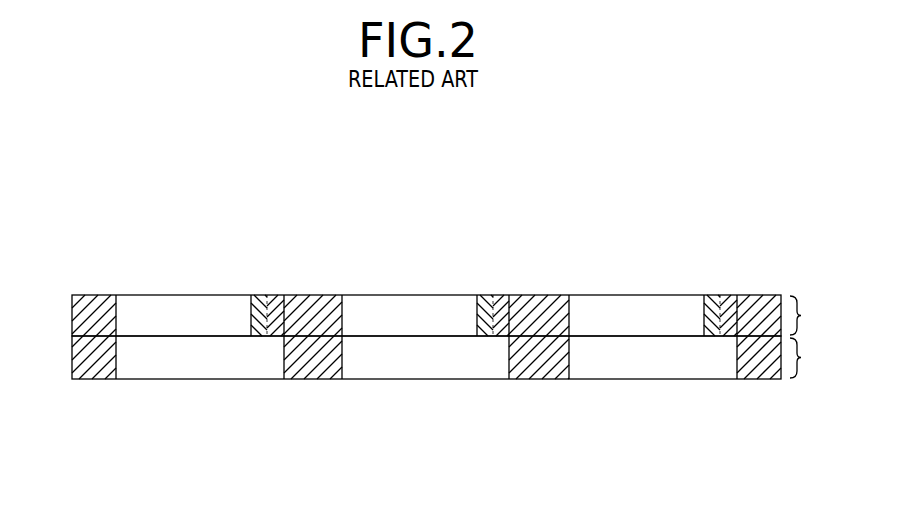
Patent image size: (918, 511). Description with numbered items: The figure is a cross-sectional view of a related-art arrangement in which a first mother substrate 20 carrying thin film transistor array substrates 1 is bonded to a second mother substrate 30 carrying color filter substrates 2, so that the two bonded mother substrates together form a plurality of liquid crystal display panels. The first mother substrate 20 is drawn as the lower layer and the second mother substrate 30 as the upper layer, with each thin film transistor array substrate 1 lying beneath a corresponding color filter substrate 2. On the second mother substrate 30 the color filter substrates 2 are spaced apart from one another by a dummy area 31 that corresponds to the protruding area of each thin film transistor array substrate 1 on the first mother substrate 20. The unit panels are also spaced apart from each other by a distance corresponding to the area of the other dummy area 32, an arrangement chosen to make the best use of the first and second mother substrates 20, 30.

The thin film transistor array substrate 1 is at (198, 365).
The color filter substrate 2 is at (195, 310).
The first mother substrate 20 is at (810, 358).
The second mother substrate 30 is at (810, 315).
The dummy area 31 is at (268, 305).
The other dummy area 32 is at (93, 303).